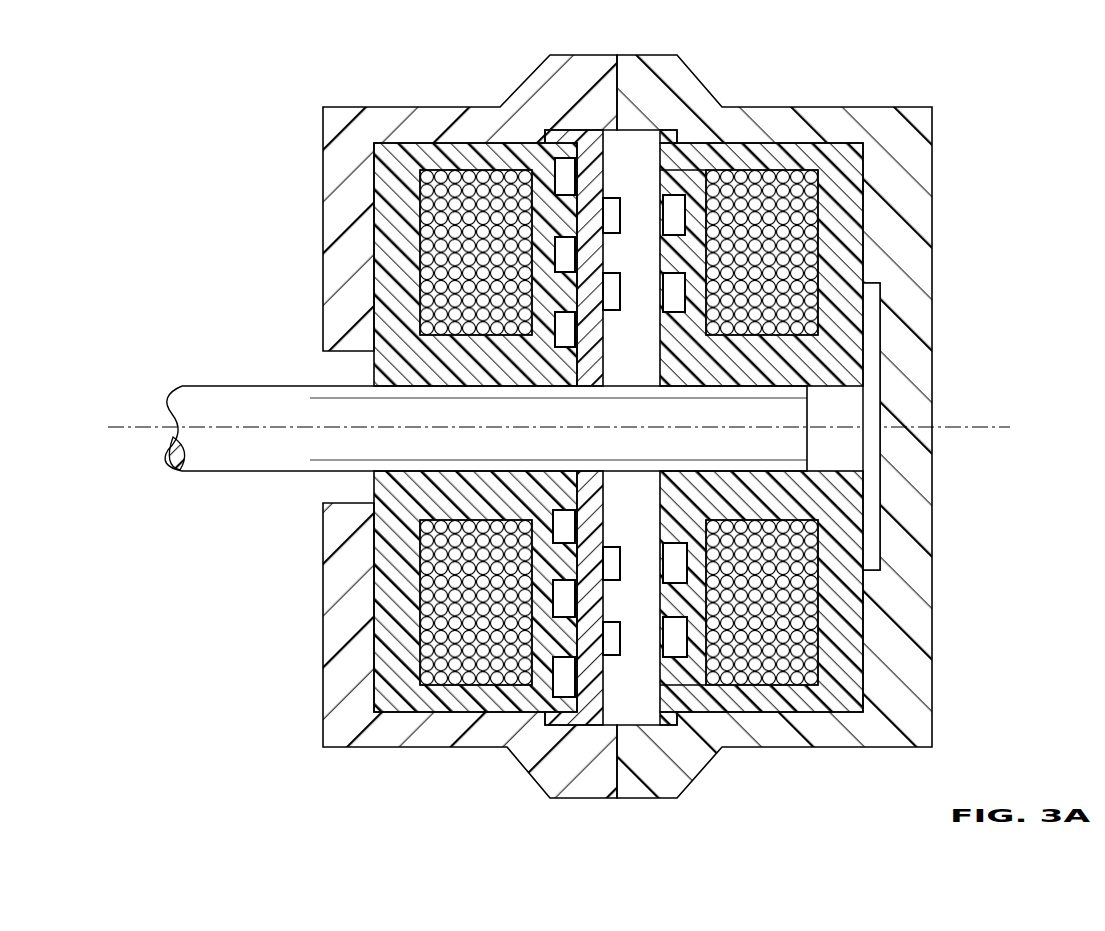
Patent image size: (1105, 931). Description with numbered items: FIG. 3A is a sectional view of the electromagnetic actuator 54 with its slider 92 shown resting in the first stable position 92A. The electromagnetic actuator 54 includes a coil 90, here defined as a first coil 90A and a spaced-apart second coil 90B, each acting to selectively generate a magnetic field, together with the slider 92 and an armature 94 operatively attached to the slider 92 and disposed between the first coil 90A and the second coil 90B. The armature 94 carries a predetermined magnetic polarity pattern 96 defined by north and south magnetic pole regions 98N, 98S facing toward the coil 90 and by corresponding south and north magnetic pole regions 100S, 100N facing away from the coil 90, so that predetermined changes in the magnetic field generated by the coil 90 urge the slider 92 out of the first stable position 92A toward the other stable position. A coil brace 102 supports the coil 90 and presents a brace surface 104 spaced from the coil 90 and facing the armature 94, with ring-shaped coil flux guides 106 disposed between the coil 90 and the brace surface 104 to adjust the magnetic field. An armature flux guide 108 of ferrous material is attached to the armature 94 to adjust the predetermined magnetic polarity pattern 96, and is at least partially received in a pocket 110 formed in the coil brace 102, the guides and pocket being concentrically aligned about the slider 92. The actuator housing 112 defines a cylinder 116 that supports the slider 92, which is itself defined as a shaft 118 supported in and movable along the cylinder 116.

The electromagnetic actuator 54 is at (671, 414).
The coil 90 is at (458, 194).
The first coil 90A is at (452, 178).
The second coil 90B is at (785, 632).
The slider 92 is at (486, 426).
The first stable position 92A is at (486, 426).
The armature 94 is at (591, 148).
The predetermined magnetic polarity pattern 96 is at (600, 178).
The north magnetic pole region 98N is at (558, 643).
The south magnetic pole region 98S is at (608, 677).
The south magnetic pole region 100S is at (704, 639).
The north magnetic pole region 100N is at (610, 597).
The coil brace 102 is at (793, 156).
The brace surface 104 is at (693, 177).
The coil flux guide 106 is at (668, 212).
The armature flux guide 108 is at (574, 163).
The pocket 110 is at (700, 190).
The actuator housing 112 is at (912, 303).
The cylinder 116 is at (838, 465).
The shaft 118 is at (215, 405).